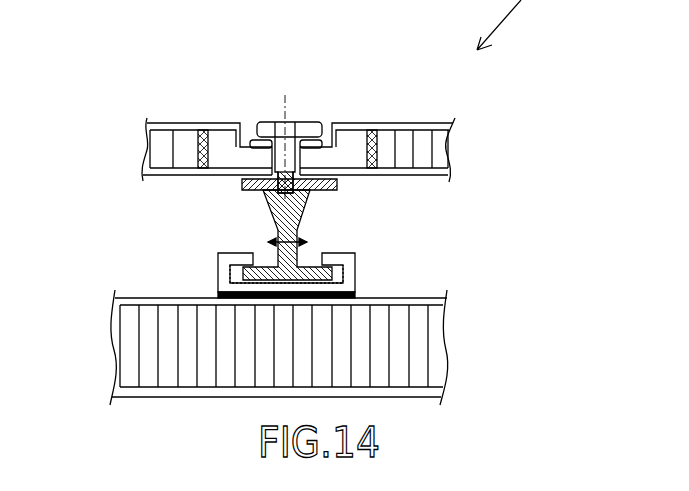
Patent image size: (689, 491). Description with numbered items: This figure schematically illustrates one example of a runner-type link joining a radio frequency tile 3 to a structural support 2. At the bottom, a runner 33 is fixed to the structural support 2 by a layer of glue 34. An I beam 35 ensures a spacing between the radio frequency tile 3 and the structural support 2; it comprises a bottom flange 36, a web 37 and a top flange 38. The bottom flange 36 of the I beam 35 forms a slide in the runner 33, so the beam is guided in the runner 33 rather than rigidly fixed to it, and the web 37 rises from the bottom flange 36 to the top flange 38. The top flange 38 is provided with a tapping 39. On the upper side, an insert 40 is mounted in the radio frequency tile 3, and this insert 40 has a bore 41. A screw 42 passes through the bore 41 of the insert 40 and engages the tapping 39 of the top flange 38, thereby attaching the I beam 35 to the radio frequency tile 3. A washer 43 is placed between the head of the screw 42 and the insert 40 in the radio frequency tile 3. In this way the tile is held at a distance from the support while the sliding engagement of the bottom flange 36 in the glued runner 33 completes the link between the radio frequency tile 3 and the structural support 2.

The structural support 2 is at (437, 367).
The radio frequency tile 3 is at (426, 150).
The runner 33 is at (353, 273).
The layer of glue 34 is at (218, 297).
The I beam 35 is at (243, 220).
The bottom flange 36 is at (267, 268).
The web 37 is at (298, 221).
The top flange 38 is at (337, 185).
The tapping 39 is at (278, 157).
The insert 40 is at (347, 161).
The bore 41 is at (323, 130).
The screw 42 is at (312, 126).
The washer 43 is at (254, 142).